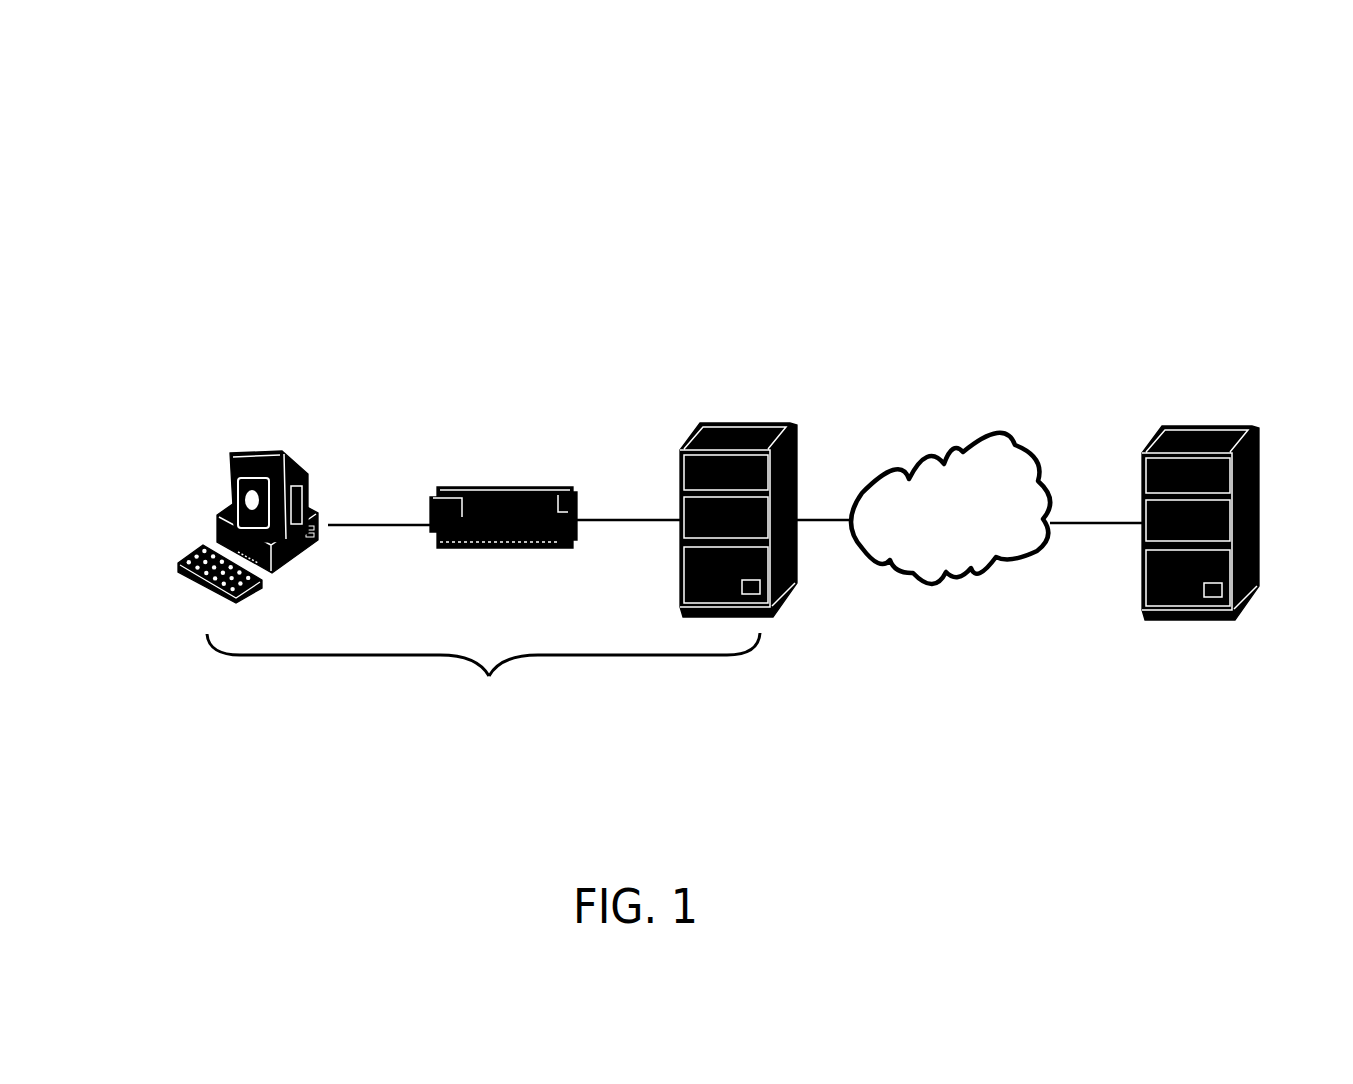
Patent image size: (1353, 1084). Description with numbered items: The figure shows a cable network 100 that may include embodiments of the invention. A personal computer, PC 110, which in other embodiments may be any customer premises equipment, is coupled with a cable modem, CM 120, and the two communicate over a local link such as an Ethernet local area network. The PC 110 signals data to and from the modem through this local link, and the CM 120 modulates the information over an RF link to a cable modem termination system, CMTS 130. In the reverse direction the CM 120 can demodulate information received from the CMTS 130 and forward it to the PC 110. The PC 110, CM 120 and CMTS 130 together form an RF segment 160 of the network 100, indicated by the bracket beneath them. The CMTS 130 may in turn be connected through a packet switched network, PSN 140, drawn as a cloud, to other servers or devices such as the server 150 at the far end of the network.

The network 100 is at (1208, 192).
The PC 110 is at (232, 440).
The CM 120 is at (465, 488).
The CMTS 130 is at (727, 422).
The packet switched network 140 is at (927, 457).
The server 150 is at (1180, 428).
The RF segment 160 is at (488, 676).